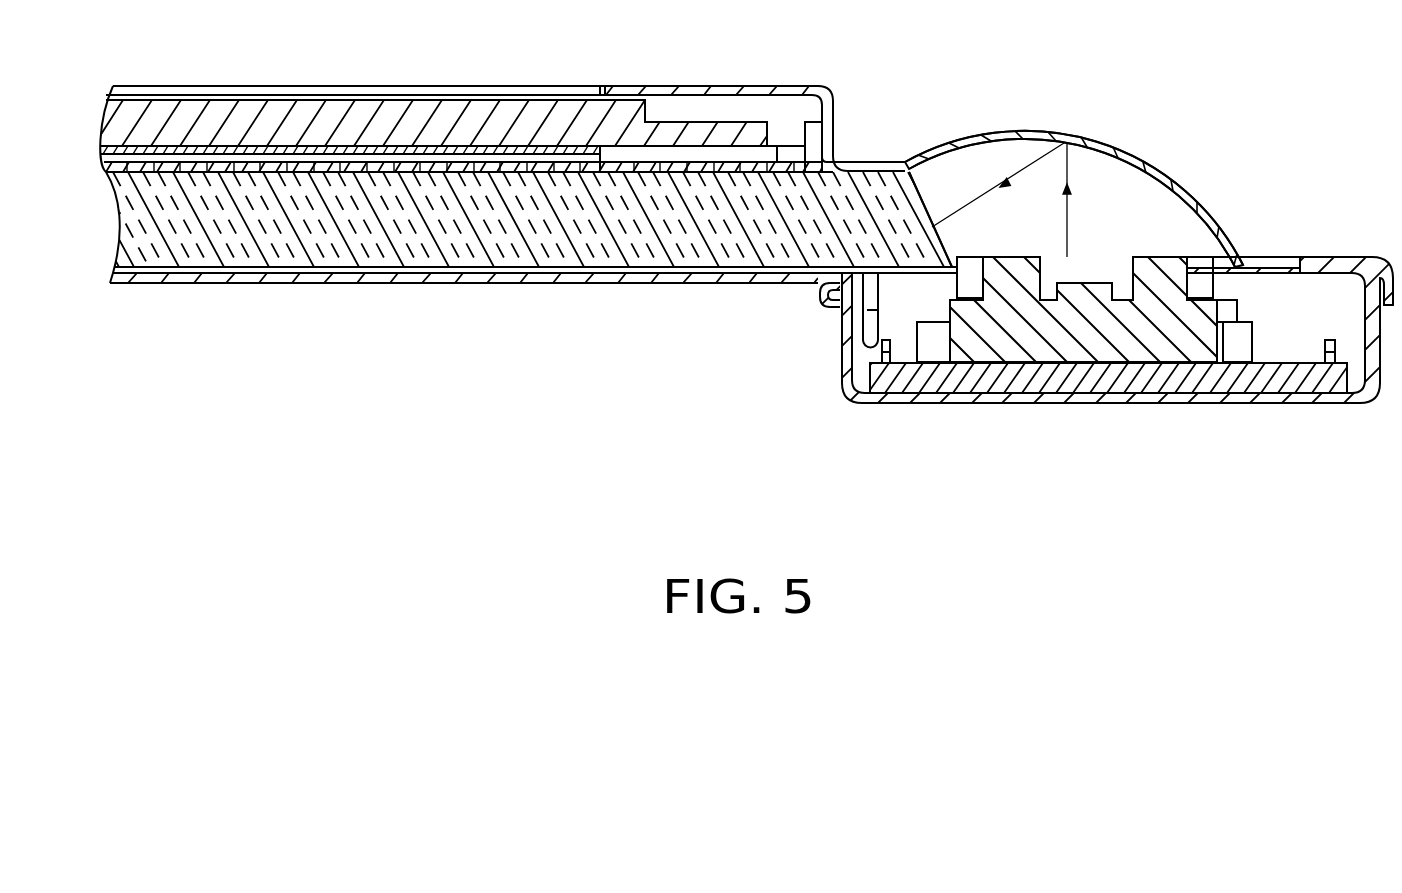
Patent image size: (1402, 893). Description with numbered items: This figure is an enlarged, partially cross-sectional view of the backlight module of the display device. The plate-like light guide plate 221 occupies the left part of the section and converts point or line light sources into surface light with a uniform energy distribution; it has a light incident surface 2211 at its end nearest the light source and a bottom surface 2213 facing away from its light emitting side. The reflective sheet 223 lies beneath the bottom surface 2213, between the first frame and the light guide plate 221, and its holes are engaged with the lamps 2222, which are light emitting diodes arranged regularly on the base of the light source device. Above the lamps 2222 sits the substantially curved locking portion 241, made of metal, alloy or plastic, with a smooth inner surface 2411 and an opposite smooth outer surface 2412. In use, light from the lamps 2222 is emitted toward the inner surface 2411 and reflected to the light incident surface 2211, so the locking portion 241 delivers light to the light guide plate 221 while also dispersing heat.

The light guide plate 221 is at (222, 240).
The light incident surface 2211 is at (932, 226).
The bottom surface 2213 is at (711, 276).
The locking portion 241 is at (1074, 147).
The outer surface 2412 is at (1086, 138).
The inner surface 2411 is at (1125, 161).
The lamps 2222 is at (1152, 283).
The reflective sheet 223 is at (1253, 267).